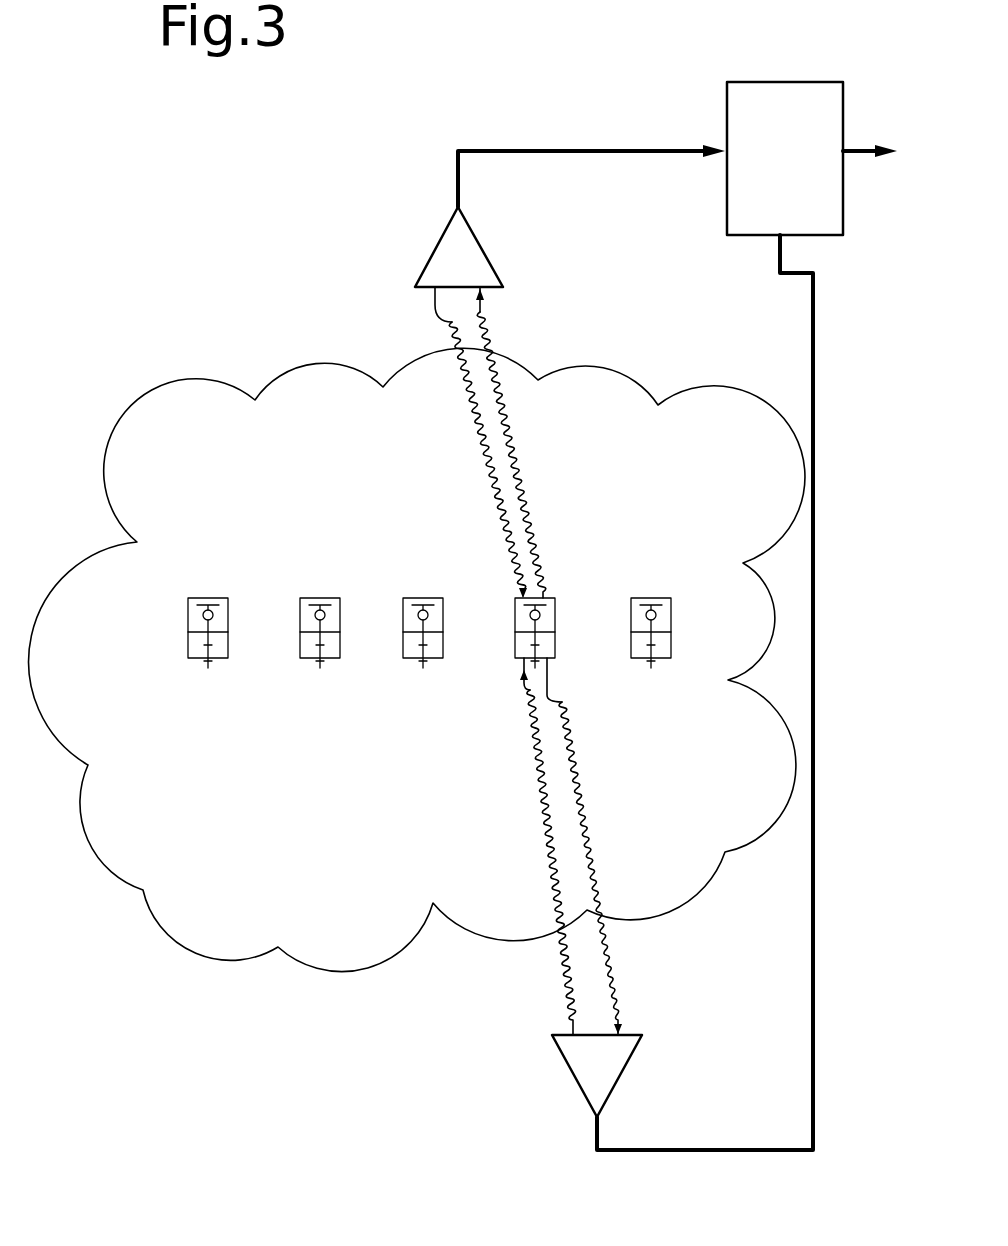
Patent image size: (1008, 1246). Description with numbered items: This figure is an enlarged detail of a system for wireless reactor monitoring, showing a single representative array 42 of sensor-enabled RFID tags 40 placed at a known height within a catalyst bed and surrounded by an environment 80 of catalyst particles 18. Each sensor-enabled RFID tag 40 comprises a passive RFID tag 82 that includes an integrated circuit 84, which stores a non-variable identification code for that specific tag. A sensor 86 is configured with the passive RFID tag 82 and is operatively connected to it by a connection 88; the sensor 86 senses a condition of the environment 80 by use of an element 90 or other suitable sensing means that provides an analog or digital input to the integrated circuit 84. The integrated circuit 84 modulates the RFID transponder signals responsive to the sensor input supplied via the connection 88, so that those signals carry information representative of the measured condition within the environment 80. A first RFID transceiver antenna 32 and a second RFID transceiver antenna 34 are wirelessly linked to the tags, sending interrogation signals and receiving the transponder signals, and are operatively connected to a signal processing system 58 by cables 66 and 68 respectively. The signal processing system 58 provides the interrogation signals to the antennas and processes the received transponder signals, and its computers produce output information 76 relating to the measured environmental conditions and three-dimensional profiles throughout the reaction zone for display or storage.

The catalyst particles 18 is at (417, 651).
The first RFID transceiver antenna 32 is at (436, 247).
The second RFID transceiver antenna 34 is at (570, 1077).
The sensor-enabled RFID tag 40 is at (392, 608).
The array 42 is at (166, 608).
The signal processing system 58 is at (805, 174).
The cable 66 is at (520, 150).
The cable 68 is at (807, 932).
The output information 76 is at (858, 148).
The environment 80 is at (157, 400).
The passive RFID tag 82 is at (189, 610).
The integrated circuit 84 is at (213, 615).
The sensor 86 is at (188, 647).
The connection 88 is at (188, 630).
The element 90 is at (217, 660).